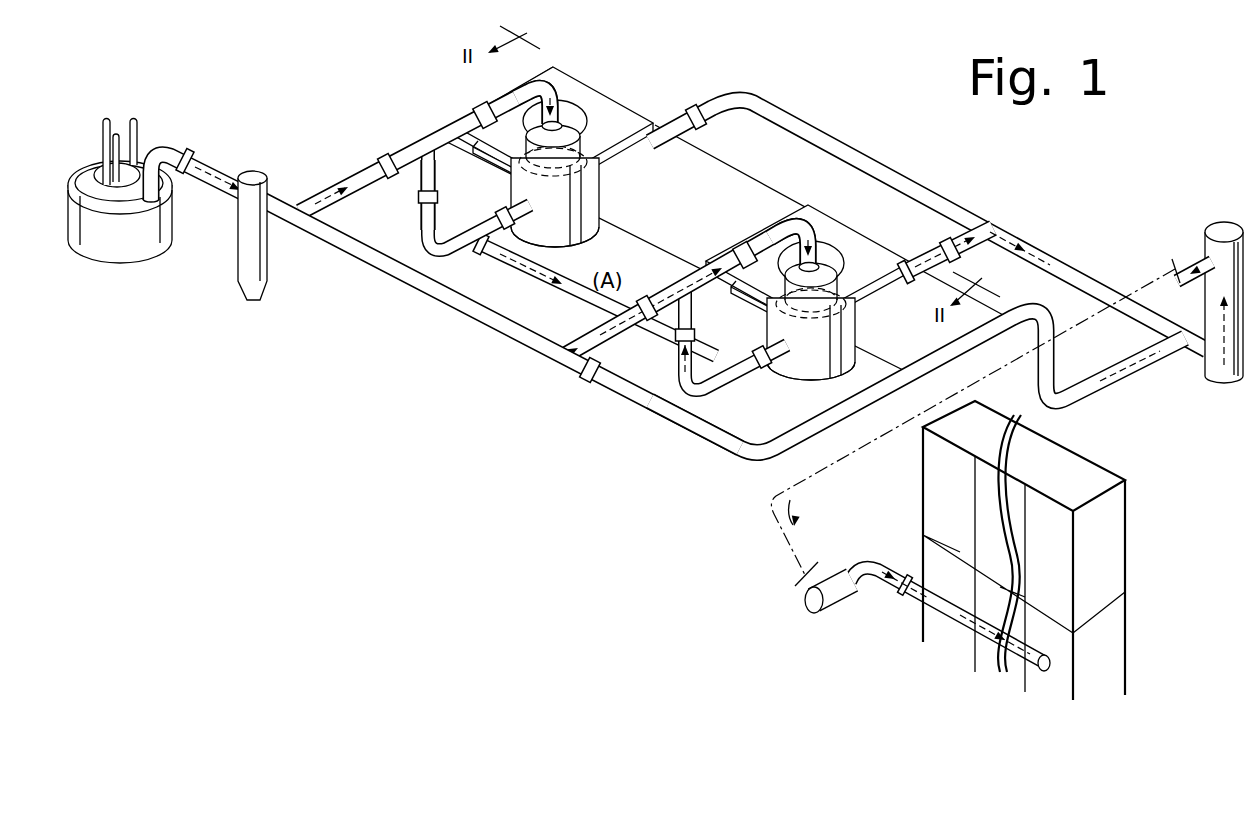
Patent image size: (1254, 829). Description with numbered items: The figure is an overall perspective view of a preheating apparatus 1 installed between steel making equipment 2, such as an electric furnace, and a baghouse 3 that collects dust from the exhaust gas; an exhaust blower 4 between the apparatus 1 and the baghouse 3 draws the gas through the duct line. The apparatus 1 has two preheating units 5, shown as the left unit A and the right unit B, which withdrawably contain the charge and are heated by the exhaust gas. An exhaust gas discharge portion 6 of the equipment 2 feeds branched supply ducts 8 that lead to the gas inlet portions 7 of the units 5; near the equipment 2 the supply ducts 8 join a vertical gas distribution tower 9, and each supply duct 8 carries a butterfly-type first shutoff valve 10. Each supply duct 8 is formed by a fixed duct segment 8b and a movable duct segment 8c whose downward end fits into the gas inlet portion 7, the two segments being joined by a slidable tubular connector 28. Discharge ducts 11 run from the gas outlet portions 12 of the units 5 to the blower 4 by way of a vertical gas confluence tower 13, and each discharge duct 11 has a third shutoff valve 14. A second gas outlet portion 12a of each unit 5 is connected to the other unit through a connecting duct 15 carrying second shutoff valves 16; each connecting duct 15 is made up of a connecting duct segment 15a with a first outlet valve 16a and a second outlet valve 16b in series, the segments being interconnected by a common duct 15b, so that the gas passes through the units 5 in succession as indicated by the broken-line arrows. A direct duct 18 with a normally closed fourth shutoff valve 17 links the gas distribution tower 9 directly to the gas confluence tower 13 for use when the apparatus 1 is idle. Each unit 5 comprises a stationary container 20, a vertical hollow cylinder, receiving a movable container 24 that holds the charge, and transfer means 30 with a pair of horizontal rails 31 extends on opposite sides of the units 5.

The preheating apparatus 1 is at (851, 128).
The steel making equipment 2 is at (157, 248).
The baghouse 3 is at (1068, 443).
The exhaust blower 4 is at (838, 611).
The preheating unit 5 is at (590, 243).
The exhaust gas discharge portion 6 is at (150, 149).
The gas inlet portion 7 is at (566, 128).
The supply duct 8 is at (350, 203).
The fixed duct segment 8b is at (442, 133).
The movable duct segment 8c is at (552, 87).
The gas distribution tower 9 is at (240, 255).
The first shutoff valve 10 is at (389, 162).
The discharge duct 11 is at (674, 118).
The gas outlet portion 12 is at (608, 173).
The second gas outlet portion 12a is at (530, 215).
The gas confluence tower 13 is at (1207, 231).
The third shutoff valve 14 is at (702, 129).
The connecting duct 15 is at (489, 257).
The connecting duct segment 15a is at (421, 213).
The common duct 15b is at (541, 285).
The second shutoff valve 16 is at (496, 213).
The first outlet valve 16a is at (503, 213).
The second outlet valve 16b is at (440, 198).
The fourth shutoff valve 17 is at (590, 386).
The direct duct 18 is at (684, 441).
The stationary container 20 is at (600, 213).
The movable container 24 is at (590, 155).
The tubular connector 28 is at (481, 106).
The transfer means 30 is at (605, 104).
The horizontal rails 31 is at (732, 187).